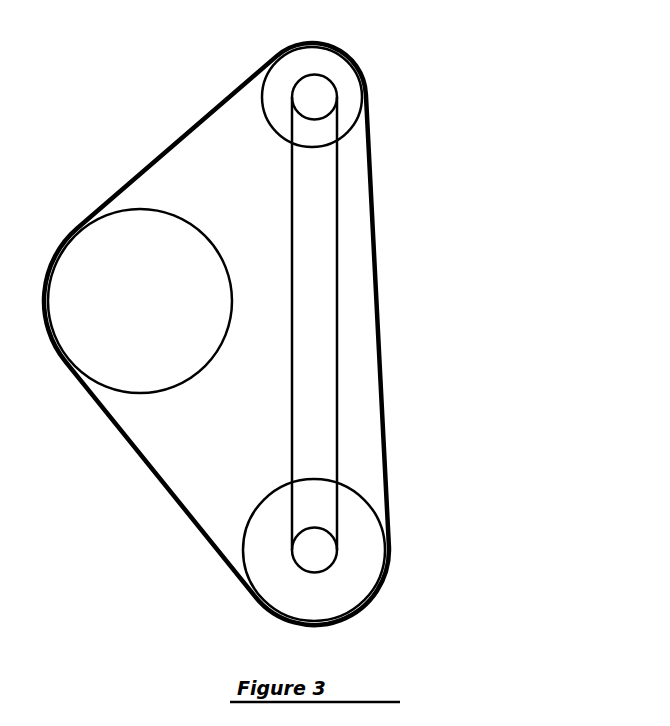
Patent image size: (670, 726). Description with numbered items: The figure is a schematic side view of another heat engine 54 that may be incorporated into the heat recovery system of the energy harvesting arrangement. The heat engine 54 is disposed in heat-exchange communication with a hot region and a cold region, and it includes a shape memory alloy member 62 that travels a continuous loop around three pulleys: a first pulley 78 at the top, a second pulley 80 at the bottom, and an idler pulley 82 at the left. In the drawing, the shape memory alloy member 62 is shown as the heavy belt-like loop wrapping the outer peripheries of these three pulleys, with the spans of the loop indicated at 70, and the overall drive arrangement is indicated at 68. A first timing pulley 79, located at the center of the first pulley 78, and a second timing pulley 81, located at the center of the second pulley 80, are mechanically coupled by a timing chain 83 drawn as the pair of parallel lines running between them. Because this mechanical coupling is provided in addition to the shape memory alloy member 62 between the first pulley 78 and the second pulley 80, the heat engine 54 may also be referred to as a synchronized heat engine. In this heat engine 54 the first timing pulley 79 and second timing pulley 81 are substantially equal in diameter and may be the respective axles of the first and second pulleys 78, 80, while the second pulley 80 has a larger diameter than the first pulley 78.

The heat engine 54 is at (535, 157).
The shape memory alloy member 62 is at (197, 132).
The tensioner assembly 68 is at (467, 313).
The belt span 70 is at (92, 198).
The first pulley 78 is at (330, 65).
The first timing pulley 79 is at (327, 100).
The second pulley 80 is at (340, 585).
The second timing pulley 81 is at (322, 552).
The idler pulley 82 is at (148, 313).
The timing chain 83 is at (290, 387).